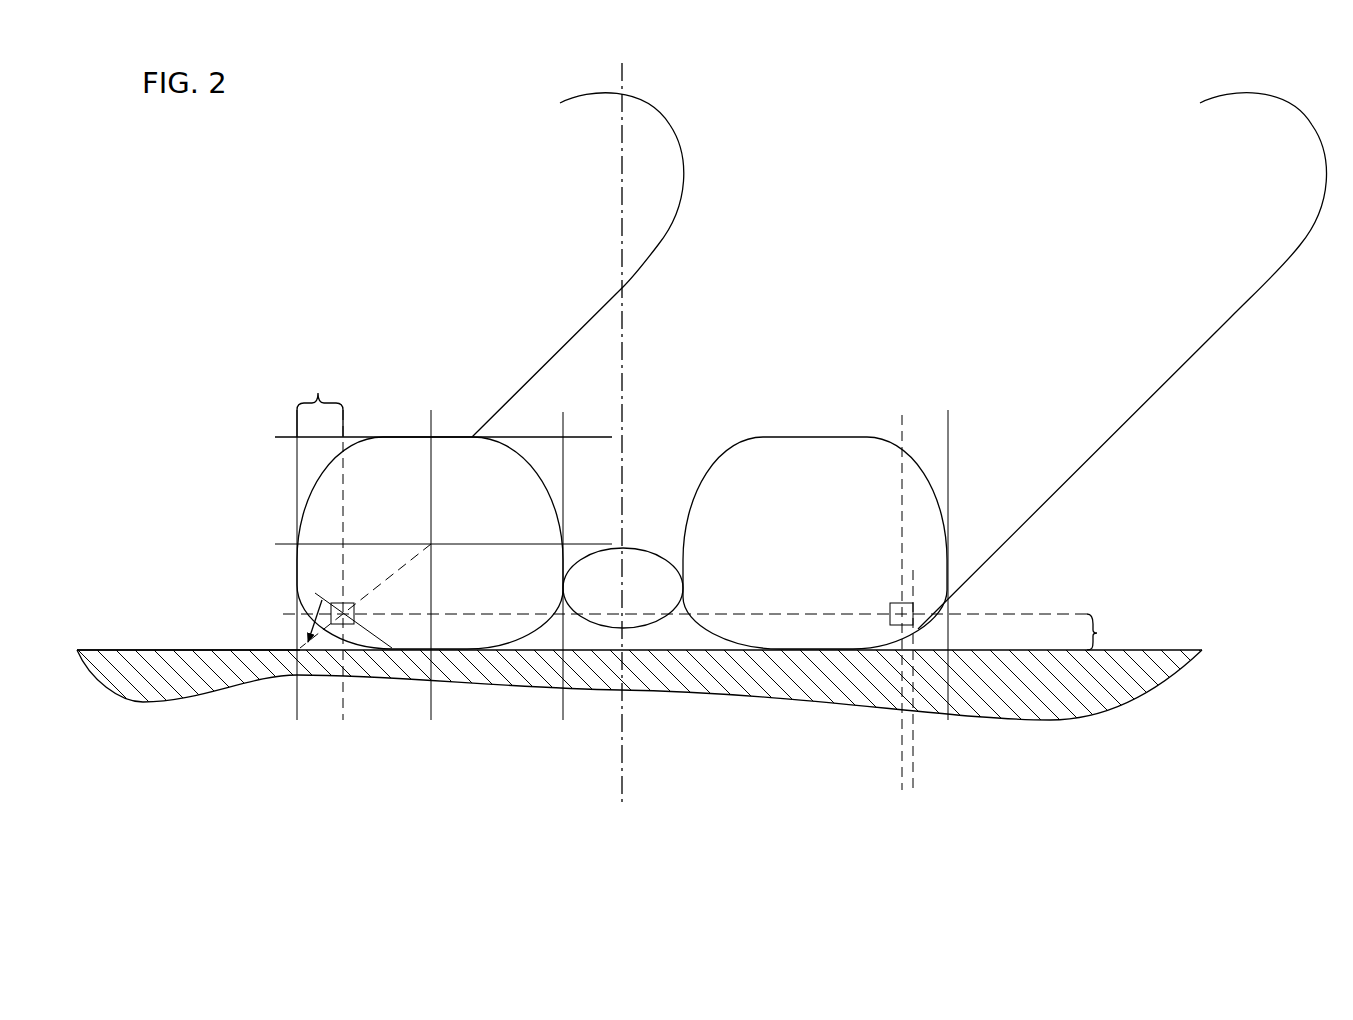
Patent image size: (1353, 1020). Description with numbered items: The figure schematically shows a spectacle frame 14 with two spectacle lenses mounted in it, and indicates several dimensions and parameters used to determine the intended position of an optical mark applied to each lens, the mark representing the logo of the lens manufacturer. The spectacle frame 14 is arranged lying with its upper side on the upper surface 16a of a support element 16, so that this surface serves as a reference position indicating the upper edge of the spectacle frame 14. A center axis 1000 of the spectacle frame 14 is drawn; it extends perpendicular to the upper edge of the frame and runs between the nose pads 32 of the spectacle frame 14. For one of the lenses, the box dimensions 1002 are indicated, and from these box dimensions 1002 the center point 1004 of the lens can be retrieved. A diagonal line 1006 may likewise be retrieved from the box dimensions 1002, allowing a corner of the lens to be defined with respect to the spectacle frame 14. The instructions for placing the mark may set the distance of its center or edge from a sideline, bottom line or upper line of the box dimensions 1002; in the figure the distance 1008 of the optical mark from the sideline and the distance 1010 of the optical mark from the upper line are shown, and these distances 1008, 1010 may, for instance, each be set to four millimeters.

The spectacle frame 14 is at (917, 305).
The support element 16 is at (200, 678).
The upper surface 16a is at (118, 656).
The nose pads 32 is at (585, 490).
The center axis 1000 is at (680, 790).
The box dimensions 1002 is at (588, 435).
The center point 1004 is at (434, 546).
The diagonal line 1006 is at (392, 572).
The distance of the optical mark from the sideline 1008 is at (320, 398).
The distance of the optical mark from the upper line 1010 is at (718, 632).